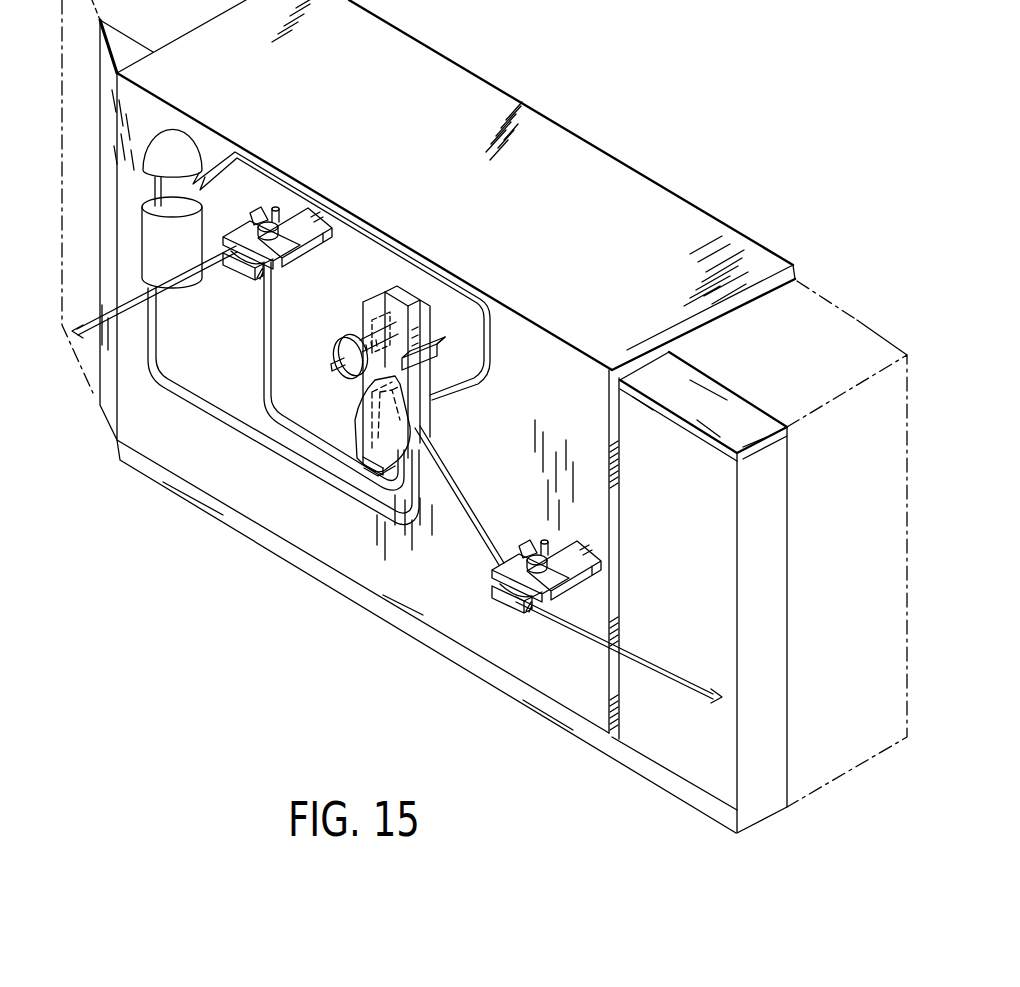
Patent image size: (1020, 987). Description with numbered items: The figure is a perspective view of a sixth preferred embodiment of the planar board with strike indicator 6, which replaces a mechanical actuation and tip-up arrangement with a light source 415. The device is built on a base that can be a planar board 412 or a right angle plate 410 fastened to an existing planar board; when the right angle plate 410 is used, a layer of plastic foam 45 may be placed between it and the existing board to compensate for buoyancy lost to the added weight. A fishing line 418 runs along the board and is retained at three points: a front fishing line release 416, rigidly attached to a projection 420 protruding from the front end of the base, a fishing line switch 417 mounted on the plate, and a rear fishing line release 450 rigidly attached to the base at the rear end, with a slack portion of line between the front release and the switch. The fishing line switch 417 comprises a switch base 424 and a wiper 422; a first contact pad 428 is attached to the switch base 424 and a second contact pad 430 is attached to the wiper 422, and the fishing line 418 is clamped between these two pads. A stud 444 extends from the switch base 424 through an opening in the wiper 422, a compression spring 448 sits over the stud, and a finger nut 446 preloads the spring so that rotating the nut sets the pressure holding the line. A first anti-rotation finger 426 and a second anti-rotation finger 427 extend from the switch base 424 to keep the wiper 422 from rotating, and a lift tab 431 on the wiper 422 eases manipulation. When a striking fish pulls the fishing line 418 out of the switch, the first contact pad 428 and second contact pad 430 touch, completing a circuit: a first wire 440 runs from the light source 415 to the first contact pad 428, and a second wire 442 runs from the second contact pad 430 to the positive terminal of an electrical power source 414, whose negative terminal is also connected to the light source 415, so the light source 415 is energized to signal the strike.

The planar board with strike indicator 6 is at (273, 663).
The layer of plastic foam 45 is at (623, 767).
The right angle plate 410 is at (618, 522).
The planar board 412 is at (866, 757).
The electrical power source 414 is at (185, 262).
The light source 415 is at (187, 143).
The front fishing line release 416 is at (247, 280).
The fishing line switch 417 is at (458, 310).
The fishing line 418 is at (133, 303).
The projection 420 is at (312, 214).
The wiper 422 is at (363, 304).
The switch base 424 is at (390, 292).
The first anti-rotation finger 426 is at (453, 330).
The second anti-rotation finger 427 is at (380, 322).
The first contact pad 428 is at (420, 413).
The second contact pad 430 is at (357, 466).
The lift tab 431 is at (372, 480).
The first wire 440 is at (250, 160).
The second wire 442 is at (210, 412).
The stud 444 is at (338, 378).
The finger nut 446 is at (336, 350).
The compression spring 448 is at (375, 322).
The rear fishing line release 450 is at (514, 608).